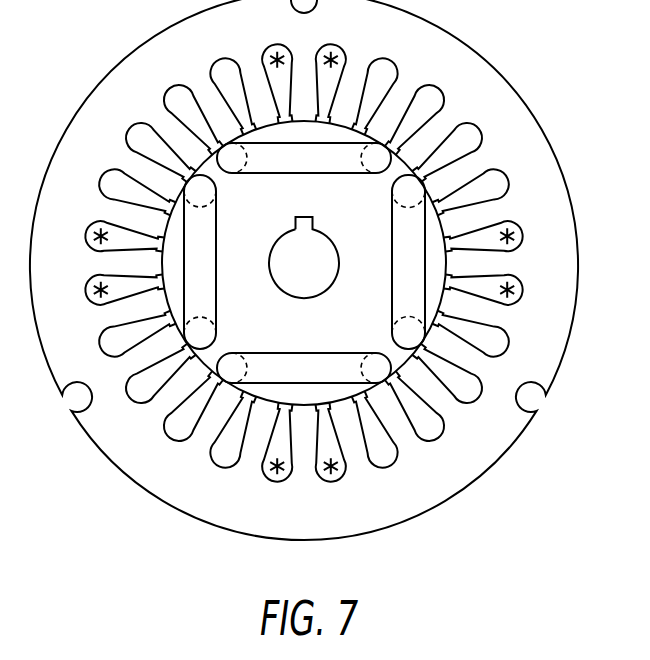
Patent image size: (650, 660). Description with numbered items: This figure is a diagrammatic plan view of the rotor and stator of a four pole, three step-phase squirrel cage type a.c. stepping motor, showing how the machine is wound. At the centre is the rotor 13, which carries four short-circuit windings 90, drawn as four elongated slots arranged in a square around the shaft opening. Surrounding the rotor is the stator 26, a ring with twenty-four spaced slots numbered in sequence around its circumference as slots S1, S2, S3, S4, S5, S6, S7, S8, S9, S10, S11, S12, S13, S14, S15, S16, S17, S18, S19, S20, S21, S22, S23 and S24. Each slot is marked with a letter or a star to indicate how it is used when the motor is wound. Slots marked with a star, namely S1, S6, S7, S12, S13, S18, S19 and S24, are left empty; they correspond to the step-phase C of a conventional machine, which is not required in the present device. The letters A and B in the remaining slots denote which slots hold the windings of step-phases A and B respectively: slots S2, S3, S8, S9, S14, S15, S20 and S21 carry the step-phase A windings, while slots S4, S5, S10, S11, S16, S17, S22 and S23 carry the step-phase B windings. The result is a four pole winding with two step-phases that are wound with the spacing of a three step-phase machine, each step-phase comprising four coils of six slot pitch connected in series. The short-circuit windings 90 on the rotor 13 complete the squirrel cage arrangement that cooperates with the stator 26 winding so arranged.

The stator 26 is at (512, 110).
The rotor 13 is at (322, 251).
The short-circuit windings 90 is at (302, 161).
The slot S1 is at (331, 44).
The slot S2 is at (382, 58).
The slot S3 is at (430, 85).
The slot S4 is at (470, 123).
The slot S5 is at (498, 173).
The slot S6 is at (520, 224).
The slot S7 is at (521, 280).
The slot S8 is at (508, 338).
The slot S9 is at (478, 398).
The slot S10 is at (440, 433).
The slot S11 is at (395, 463).
The slot S12 is at (334, 482).
The slot S13 is at (279, 482).
The slot S14 is at (214, 462).
The slot S15 is at (167, 426).
The slot S16 is at (128, 393).
The slot S17 is at (100, 342).
The slot S18 is at (87, 287).
The slot S19 is at (89, 230).
The slot S20 is at (102, 175).
The slot S21 is at (134, 124).
The slot S22 is at (173, 87).
The slot S23 is at (219, 59).
The slot S24 is at (276, 44).